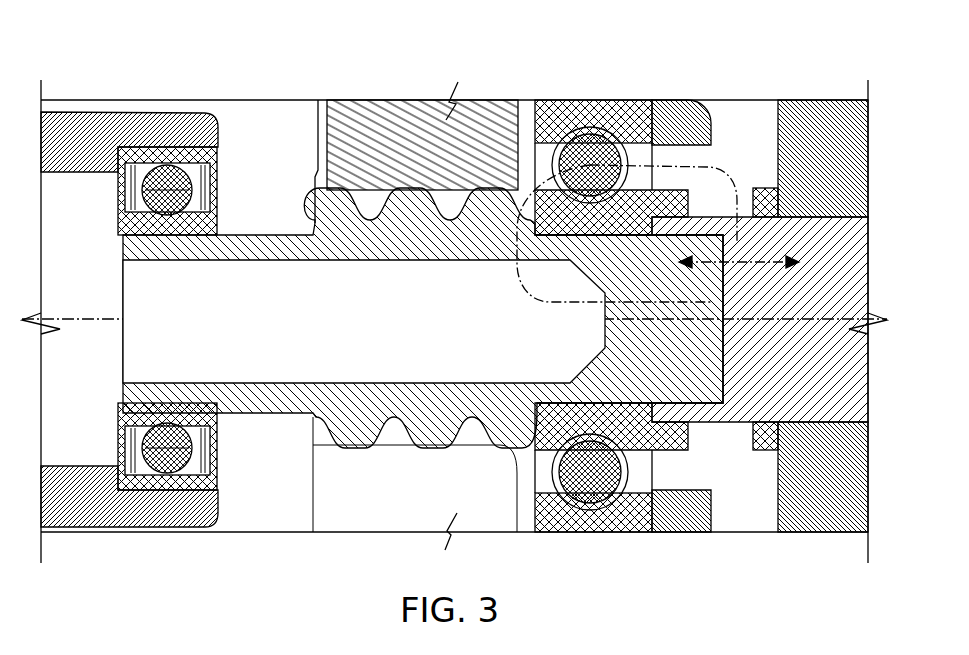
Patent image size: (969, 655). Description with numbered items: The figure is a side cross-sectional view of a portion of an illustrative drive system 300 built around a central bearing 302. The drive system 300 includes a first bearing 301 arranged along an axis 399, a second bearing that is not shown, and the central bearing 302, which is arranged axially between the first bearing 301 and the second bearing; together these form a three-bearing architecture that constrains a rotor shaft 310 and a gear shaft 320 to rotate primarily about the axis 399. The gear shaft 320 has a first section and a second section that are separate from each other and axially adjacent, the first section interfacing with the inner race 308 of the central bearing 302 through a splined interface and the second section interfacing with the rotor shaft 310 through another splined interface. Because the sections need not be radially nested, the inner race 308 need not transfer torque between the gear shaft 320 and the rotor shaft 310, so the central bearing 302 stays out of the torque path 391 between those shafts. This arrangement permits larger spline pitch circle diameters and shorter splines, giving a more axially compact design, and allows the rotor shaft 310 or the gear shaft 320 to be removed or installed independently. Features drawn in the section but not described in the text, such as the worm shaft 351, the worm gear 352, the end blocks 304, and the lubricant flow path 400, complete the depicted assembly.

The drive system 300 is at (476, 31).
The first bearing 301 is at (163, 115).
The central bearing 302 is at (592, 113).
The end cover 304 is at (828, 101).
The inner race 308 is at (646, 202).
The rotor shaft 310 is at (811, 358).
The gear shaft 320 is at (670, 358).
The worm shaft 351 is at (378, 249).
The worm gear 352 is at (386, 140).
The torque path 391 is at (750, 235).
The axis 399 is at (97, 317).
The lubricant flow path 400 is at (722, 175).